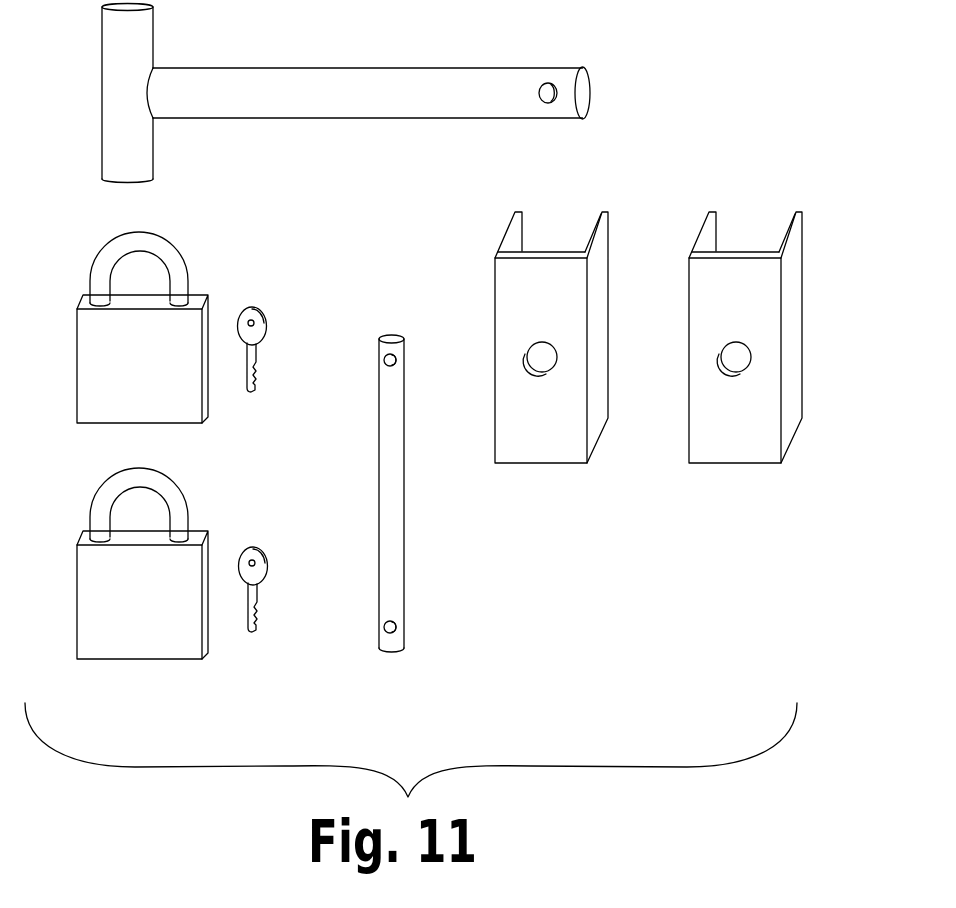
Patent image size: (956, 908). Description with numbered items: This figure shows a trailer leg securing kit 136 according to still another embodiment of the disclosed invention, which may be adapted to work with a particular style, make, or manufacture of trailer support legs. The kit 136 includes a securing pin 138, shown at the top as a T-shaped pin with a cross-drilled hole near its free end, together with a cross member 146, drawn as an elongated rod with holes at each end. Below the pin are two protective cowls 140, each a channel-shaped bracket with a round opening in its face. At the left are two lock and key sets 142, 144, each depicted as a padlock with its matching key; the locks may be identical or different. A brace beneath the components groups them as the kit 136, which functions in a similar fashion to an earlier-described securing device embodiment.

The kit 136 is at (596, 668).
The securing pin 138 is at (372, 68).
The protective cowl 140 is at (608, 258).
The lock and key set 142 is at (255, 283).
The lock and key set 144 is at (237, 517).
The cross member 146 is at (405, 558).